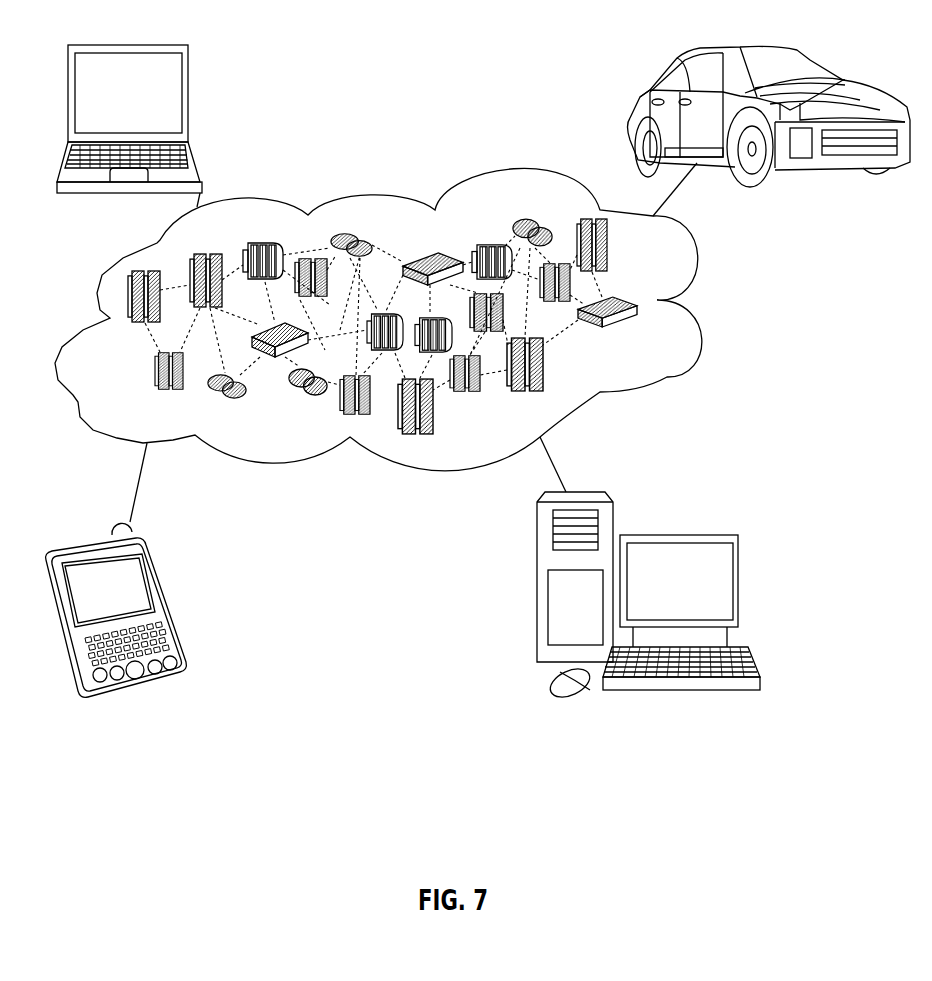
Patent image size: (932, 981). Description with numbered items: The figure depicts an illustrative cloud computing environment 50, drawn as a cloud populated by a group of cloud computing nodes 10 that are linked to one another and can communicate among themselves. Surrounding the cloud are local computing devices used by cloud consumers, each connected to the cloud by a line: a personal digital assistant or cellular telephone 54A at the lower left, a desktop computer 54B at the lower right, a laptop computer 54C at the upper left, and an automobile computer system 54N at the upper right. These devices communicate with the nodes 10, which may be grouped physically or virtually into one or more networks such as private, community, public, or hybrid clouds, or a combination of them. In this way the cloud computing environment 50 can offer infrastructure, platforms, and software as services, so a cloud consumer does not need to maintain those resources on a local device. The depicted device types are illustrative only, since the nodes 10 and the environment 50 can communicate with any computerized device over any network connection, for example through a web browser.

The cloud computing nodes 10 is at (657, 353).
The cloud computing environment 50 is at (697, 255).
The personal digital assistant (PDA) or cellular telephone 54A is at (163, 580).
The desktop computer 54B is at (738, 580).
The laptop computer 54C is at (188, 98).
The automobile computer system 54N is at (808, 67).